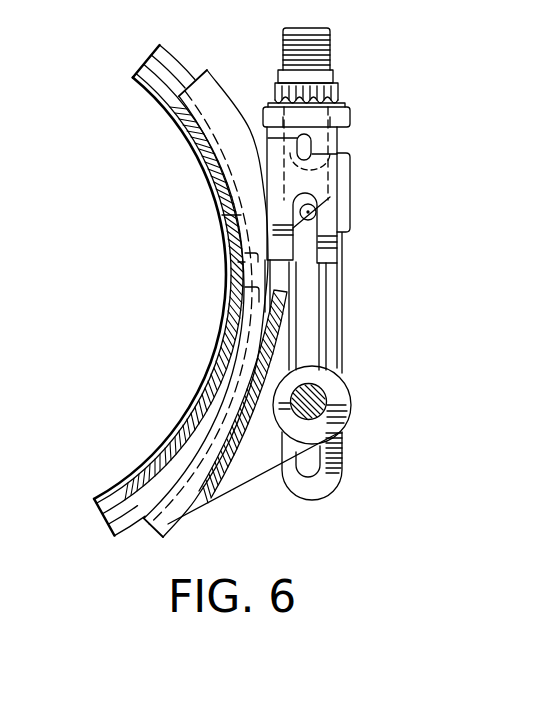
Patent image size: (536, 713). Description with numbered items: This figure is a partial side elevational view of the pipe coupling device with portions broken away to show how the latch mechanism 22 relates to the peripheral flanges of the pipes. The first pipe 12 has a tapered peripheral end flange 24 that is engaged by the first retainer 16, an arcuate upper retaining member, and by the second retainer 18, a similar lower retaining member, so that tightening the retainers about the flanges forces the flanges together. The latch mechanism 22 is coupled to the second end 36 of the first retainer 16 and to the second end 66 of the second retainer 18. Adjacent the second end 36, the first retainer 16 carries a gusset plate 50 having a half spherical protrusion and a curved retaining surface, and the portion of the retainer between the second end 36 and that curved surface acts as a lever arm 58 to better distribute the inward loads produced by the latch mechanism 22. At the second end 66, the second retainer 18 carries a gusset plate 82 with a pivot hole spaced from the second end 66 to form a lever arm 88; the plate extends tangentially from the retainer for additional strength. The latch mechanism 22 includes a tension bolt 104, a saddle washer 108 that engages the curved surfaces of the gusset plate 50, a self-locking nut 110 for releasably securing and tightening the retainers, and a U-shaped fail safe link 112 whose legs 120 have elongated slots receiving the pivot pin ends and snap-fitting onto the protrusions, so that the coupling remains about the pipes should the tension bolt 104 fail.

The first pipe 12 is at (183, 133).
The first retainer 16 is at (197, 63).
The second retainer 18 is at (160, 536).
The latch mechanism 22 is at (352, 338).
The peripheral end flange 24 is at (142, 57).
The second end 36 is at (240, 262).
The gusset plate 50 is at (349, 192).
The lever arm 58 is at (232, 215).
The second end 66 is at (242, 290).
The gusset plate 82 is at (250, 488).
The lever arm 88 is at (262, 347).
The tension bolt 104 is at (328, 346).
The saddle washer 108 is at (378, 116).
The self-locking nut 110 is at (340, 102).
The fail safe link 112 is at (337, 240).
The leg 120 is at (343, 477).